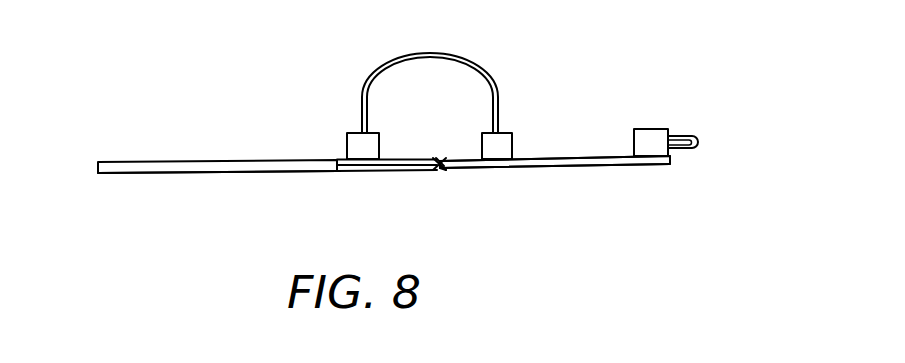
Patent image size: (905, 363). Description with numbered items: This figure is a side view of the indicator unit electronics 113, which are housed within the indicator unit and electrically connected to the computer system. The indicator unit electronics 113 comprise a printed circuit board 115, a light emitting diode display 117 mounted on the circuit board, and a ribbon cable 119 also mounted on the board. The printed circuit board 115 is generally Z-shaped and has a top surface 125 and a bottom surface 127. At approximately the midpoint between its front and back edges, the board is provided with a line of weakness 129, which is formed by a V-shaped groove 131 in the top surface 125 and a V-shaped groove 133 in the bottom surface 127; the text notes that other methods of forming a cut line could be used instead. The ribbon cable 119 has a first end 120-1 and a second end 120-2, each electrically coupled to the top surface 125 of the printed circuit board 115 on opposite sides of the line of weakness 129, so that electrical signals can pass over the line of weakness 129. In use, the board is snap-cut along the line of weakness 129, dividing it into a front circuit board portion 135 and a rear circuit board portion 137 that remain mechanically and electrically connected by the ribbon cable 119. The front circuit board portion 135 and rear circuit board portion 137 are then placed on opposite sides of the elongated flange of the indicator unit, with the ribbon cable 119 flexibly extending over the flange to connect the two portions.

The indicator unit electronics 113 is at (168, 131).
The printed circuit board 115 is at (577, 157).
The light emitting diode (LED) display 117 is at (656, 136).
The ribbon cable 119 is at (415, 54).
The first end 120-1 is at (362, 142).
The second end 120-2 is at (502, 145).
The top surface 125 is at (280, 158).
The bottom surface 127 is at (642, 167).
The line of weakness 129 is at (458, 185).
The V-shaped groove 131 is at (443, 160).
The V-shaped groove 133 is at (438, 165).
The front circuit board portion 135 is at (555, 167).
The rear circuit board portion 137 is at (256, 173).